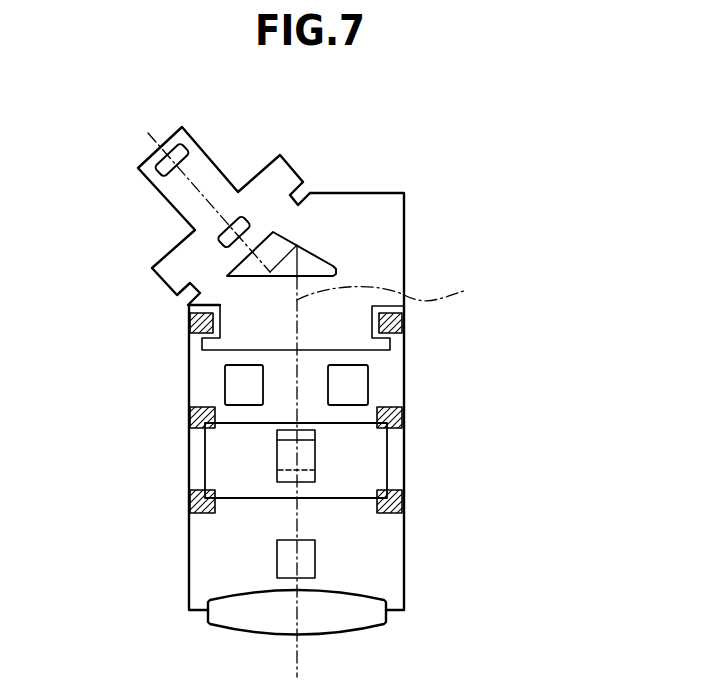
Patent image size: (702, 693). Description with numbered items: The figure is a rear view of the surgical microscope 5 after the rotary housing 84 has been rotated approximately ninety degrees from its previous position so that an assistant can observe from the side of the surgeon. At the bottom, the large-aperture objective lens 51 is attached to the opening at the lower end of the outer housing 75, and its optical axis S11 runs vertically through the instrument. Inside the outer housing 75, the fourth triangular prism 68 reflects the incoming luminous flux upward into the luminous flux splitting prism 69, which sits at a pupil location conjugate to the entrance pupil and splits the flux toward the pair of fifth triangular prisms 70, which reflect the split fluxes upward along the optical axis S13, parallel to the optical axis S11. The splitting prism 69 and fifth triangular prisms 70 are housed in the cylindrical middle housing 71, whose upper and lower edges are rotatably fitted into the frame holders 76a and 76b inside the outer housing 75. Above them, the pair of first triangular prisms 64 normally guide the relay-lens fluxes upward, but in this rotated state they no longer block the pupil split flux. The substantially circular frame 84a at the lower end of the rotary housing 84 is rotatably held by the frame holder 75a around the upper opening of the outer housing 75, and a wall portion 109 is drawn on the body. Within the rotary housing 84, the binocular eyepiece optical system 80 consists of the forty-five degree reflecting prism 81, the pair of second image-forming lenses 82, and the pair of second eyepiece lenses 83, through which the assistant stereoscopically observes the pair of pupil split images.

The surgical microscope 5 is at (338, 334).
The binocular eyepiece optical system 80 is at (202, 98).
The 45° reflecting prism 81 is at (323, 260).
The second image-forming lenses 82 is at (240, 217).
The second eyepiece lenses 83 is at (183, 147).
The rotary housing 84 is at (405, 247).
The substantially circular frame 84a is at (228, 324).
The outer housing 75 is at (404, 545).
The frame holder 75a is at (402, 323).
The frame holder 76a is at (402, 418).
The frame holder 76b is at (402, 500).
The housing wall 109 is at (188, 372).
The first triangular prisms 64 is at (225, 386).
The middle housing 71 is at (205, 474).
The luminous flux splitting prism 69 is at (315, 435).
The fifth triangular prisms 70 is at (277, 470).
The fourth triangular prism 68 is at (277, 565).
The objective lens 51 is at (365, 628).
The optical axis of the objective lens S11 is at (296, 662).
The optical axis of luminous fluxes reflected by the fifth triangular prisms S13 is at (402, 293).